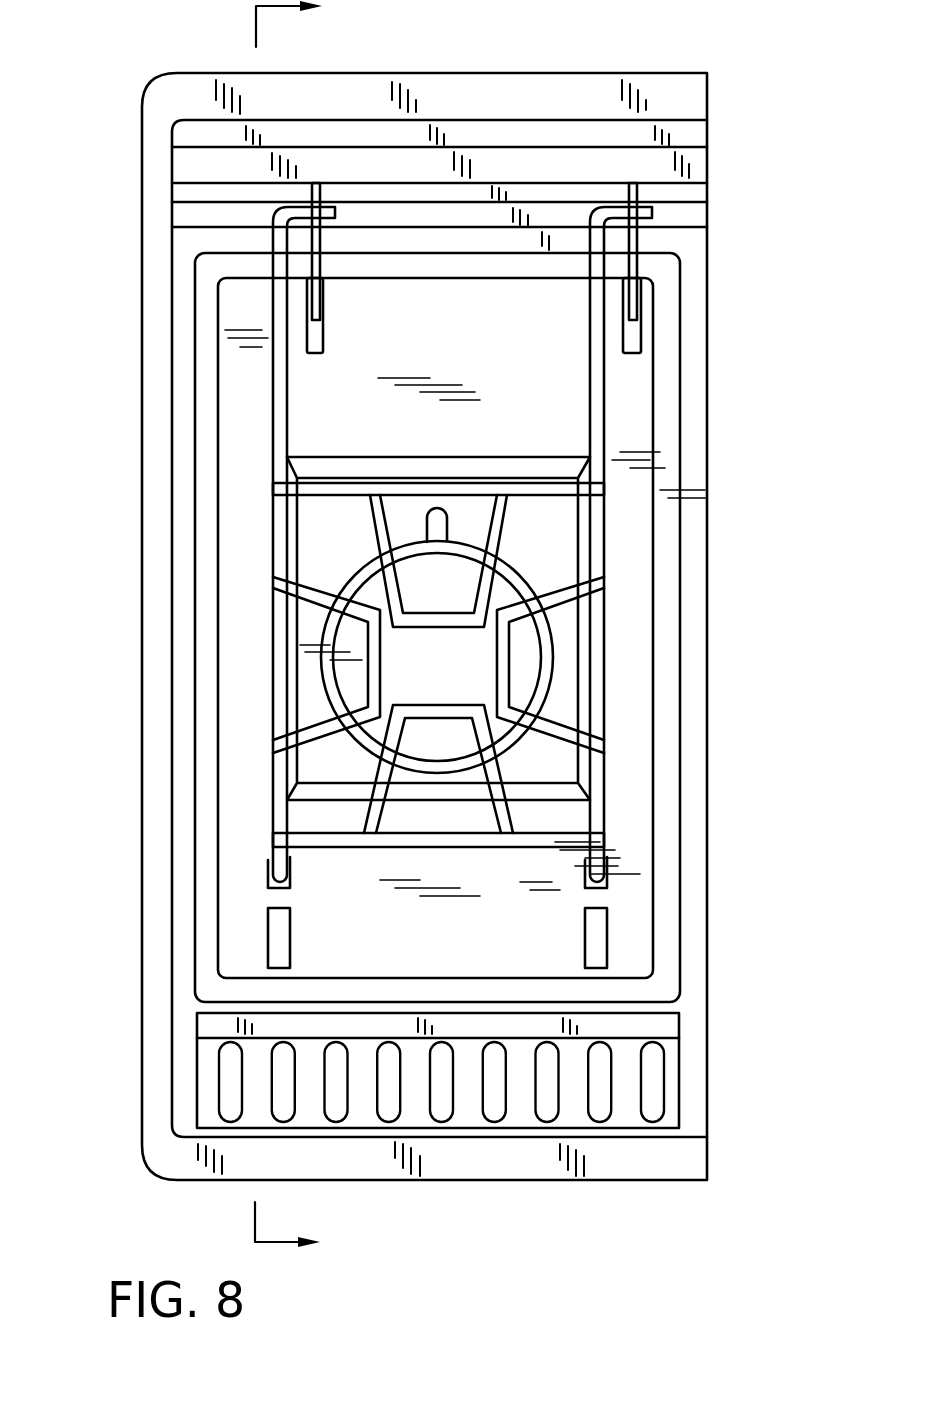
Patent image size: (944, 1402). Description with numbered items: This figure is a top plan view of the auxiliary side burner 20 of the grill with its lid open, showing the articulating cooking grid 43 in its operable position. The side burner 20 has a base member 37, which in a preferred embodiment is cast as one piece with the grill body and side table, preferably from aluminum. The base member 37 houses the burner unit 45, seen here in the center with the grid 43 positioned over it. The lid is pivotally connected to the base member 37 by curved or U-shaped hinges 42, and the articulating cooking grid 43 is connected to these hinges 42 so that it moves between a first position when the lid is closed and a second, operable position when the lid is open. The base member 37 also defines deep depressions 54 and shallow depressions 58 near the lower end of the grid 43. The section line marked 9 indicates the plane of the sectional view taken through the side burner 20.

The section line 9- 9 is at (304, 629).
The auxiliary side burner 20 is at (409, 629).
The base member 37 is at (122, 104).
The hinges 42 is at (317, 265).
The articulating cooking grid 43 is at (597, 627).
The burner unit 45 is at (523, 577).
The deep depressions 54 is at (280, 935).
The shallow depressions 58 is at (290, 888).